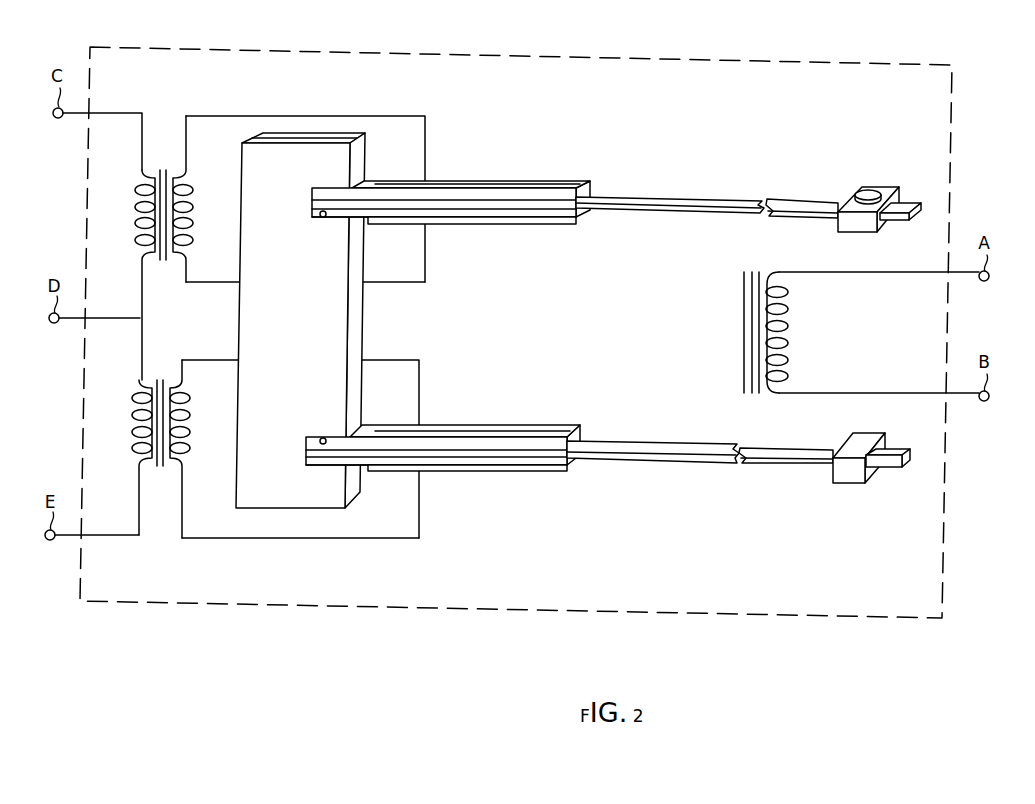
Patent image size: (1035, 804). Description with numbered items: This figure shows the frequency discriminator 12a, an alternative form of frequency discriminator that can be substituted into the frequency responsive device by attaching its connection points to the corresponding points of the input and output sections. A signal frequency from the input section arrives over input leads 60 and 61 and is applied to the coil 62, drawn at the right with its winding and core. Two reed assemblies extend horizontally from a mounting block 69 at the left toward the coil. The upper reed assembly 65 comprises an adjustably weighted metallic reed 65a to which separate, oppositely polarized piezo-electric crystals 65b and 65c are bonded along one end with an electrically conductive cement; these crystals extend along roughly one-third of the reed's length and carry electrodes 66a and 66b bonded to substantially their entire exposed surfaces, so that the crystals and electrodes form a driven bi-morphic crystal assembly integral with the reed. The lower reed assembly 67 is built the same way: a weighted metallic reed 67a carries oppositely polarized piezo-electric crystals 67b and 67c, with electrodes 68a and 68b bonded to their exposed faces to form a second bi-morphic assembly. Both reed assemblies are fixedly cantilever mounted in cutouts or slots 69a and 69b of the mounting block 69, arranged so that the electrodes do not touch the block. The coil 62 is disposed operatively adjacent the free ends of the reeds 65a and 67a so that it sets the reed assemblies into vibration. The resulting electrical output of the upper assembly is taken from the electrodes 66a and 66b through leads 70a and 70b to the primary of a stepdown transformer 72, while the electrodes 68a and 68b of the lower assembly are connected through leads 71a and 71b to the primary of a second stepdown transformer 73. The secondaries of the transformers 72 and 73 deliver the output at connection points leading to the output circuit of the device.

The frequency discriminator 12a is at (441, 52).
The input lead 60 is at (843, 273).
The input lead 61 is at (860, 393).
The coil 62 is at (743, 326).
The reed assembly 65 is at (611, 194).
The adjustably weighted metallic reed 65a is at (690, 197).
The piezo-electric crystal 65b is at (531, 181).
The piezo-electric crystal 65c is at (535, 224).
The electrode 66a is at (470, 180).
The electrode 66b is at (470, 225).
The reed assembly 67 is at (599, 440).
The weighted metallic reed 67a is at (642, 441).
The piezo-electric crystal 67b is at (523, 426).
The piezo-electric crystal 67c is at (529, 471).
The electrode 68a is at (460, 426).
The electrode 68b is at (466, 471).
The mounting block 69 is at (238, 327).
The slot 69a is at (322, 218).
The slot 69b is at (323, 437).
The lead 70a is at (320, 116).
The lead 70b is at (400, 284).
The lead 71a is at (395, 362).
The lead 71b is at (378, 540).
The stepdown transformer 72 is at (160, 170).
The stepdown transformer 73 is at (158, 378).